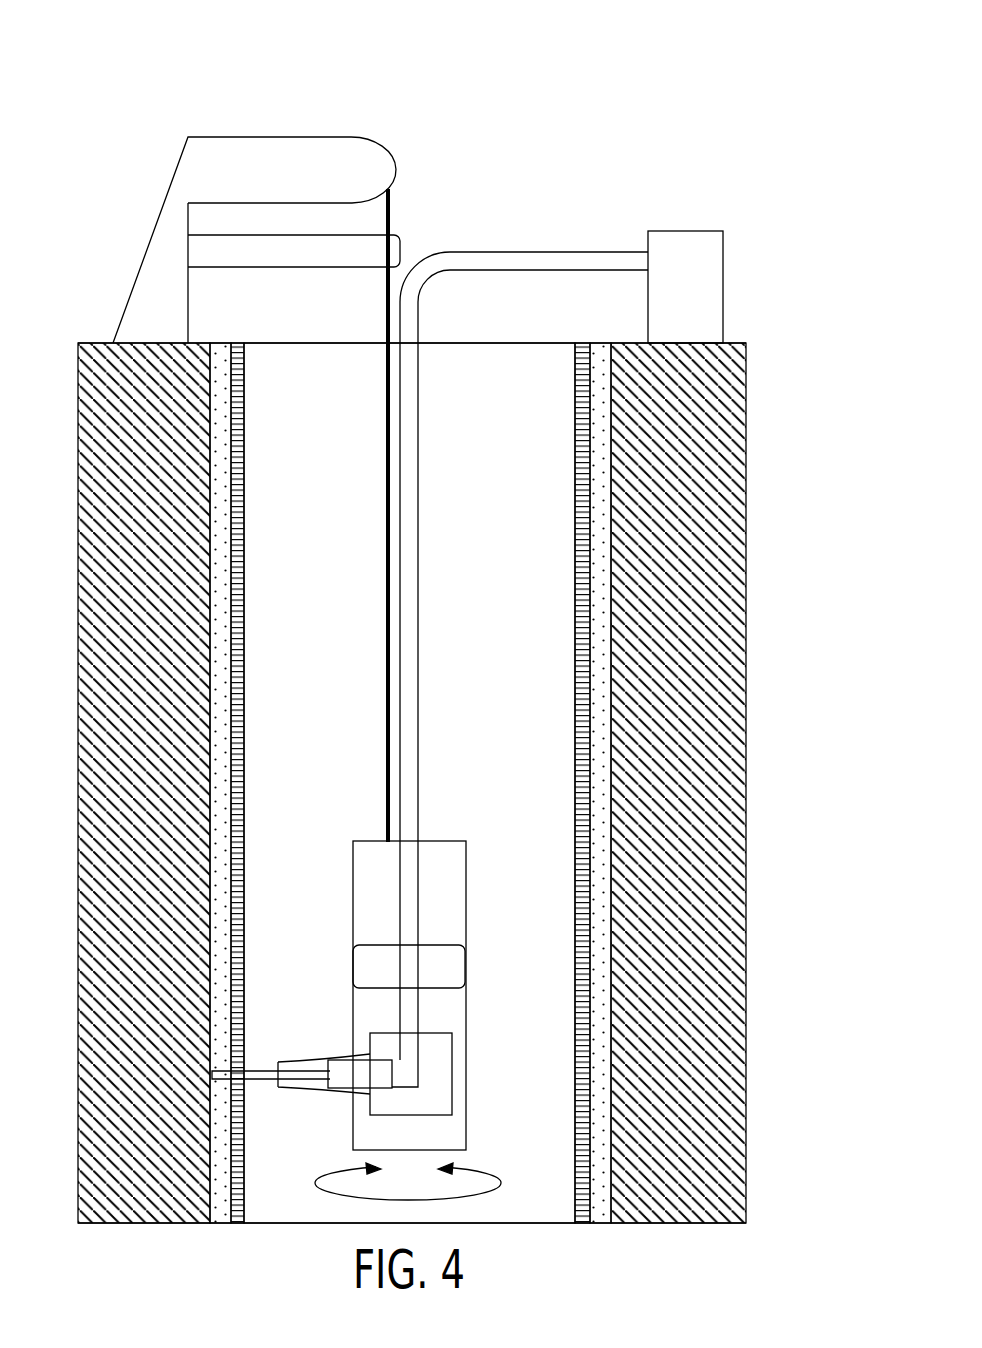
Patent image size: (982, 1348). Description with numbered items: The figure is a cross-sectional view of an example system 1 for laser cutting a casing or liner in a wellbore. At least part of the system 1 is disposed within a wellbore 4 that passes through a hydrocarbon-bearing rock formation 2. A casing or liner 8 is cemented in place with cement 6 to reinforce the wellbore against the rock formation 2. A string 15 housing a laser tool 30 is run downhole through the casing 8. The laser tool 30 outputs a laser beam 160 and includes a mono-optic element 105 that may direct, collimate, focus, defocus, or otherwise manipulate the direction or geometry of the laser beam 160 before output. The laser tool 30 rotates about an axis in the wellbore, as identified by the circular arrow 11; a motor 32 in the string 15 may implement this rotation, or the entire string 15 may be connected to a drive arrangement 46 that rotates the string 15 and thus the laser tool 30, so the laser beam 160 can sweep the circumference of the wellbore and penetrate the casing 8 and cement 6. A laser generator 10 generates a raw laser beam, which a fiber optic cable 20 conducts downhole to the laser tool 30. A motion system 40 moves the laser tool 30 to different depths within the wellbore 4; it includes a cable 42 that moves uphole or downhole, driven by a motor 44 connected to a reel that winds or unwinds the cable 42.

The system 1 is at (578, 35).
The rock formation 2 is at (692, 510).
The wellbore 4 is at (325, 372).
The cement 6 is at (602, 637).
The casing or liner 8 is at (585, 717).
The laser generator 10 is at (710, 297).
The circular arrow 11 is at (453, 1198).
The string 15 is at (447, 886).
The fiber optic cable 20 is at (420, 590).
The laser tool 30 is at (452, 1072).
The motor 32 is at (445, 967).
The motion system 40 is at (163, 147).
The cable 42 is at (391, 209).
The motor 44 is at (378, 143).
The drive arrangement 46 is at (378, 257).
The mono-optic element 105 is at (353, 1073).
The laser beam 160 is at (258, 1076).